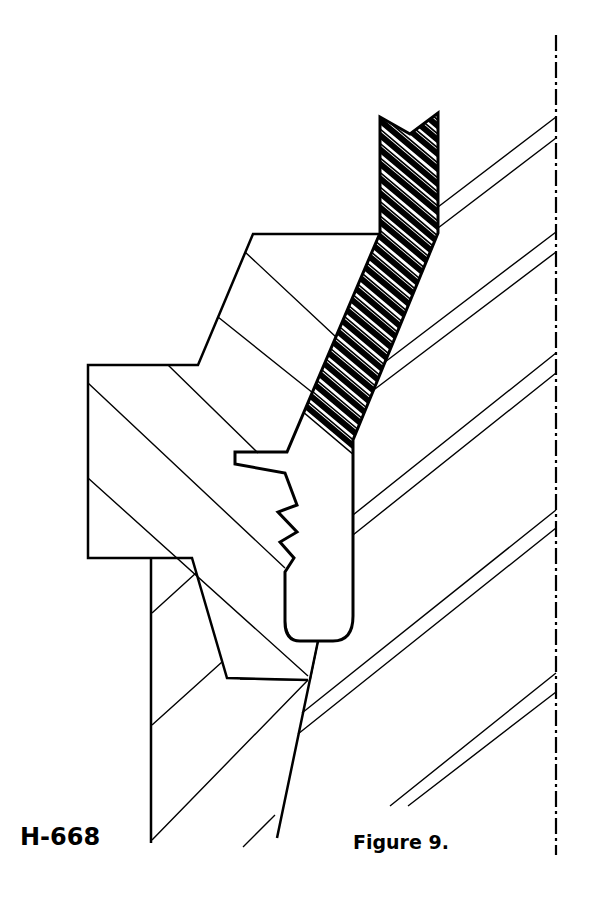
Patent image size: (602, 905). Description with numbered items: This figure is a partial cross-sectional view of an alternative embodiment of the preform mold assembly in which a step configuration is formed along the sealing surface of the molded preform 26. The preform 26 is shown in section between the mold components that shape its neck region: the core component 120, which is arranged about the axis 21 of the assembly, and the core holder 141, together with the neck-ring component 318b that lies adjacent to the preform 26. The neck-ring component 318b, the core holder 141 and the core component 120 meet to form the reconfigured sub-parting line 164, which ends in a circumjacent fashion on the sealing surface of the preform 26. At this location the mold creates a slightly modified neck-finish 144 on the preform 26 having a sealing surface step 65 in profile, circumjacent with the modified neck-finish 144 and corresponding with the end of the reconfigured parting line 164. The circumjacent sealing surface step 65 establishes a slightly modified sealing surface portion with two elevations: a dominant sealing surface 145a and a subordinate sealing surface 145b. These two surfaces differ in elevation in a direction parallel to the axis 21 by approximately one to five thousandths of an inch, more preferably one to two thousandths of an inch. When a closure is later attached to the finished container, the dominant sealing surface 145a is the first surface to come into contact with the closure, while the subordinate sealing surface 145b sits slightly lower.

The axis 21 is at (553, 89).
The preform 26 is at (358, 332).
The housing body 318b is at (168, 395).
The core component 120 is at (506, 345).
The modified neck-finish 144 is at (245, 540).
The subordinate sealing surface 145b is at (292, 642).
The sealing surface step 65 is at (308, 662).
The sub-parting line 164 is at (257, 682).
The core holder 141 is at (203, 746).
The dominant sealing surface 145a is at (327, 643).